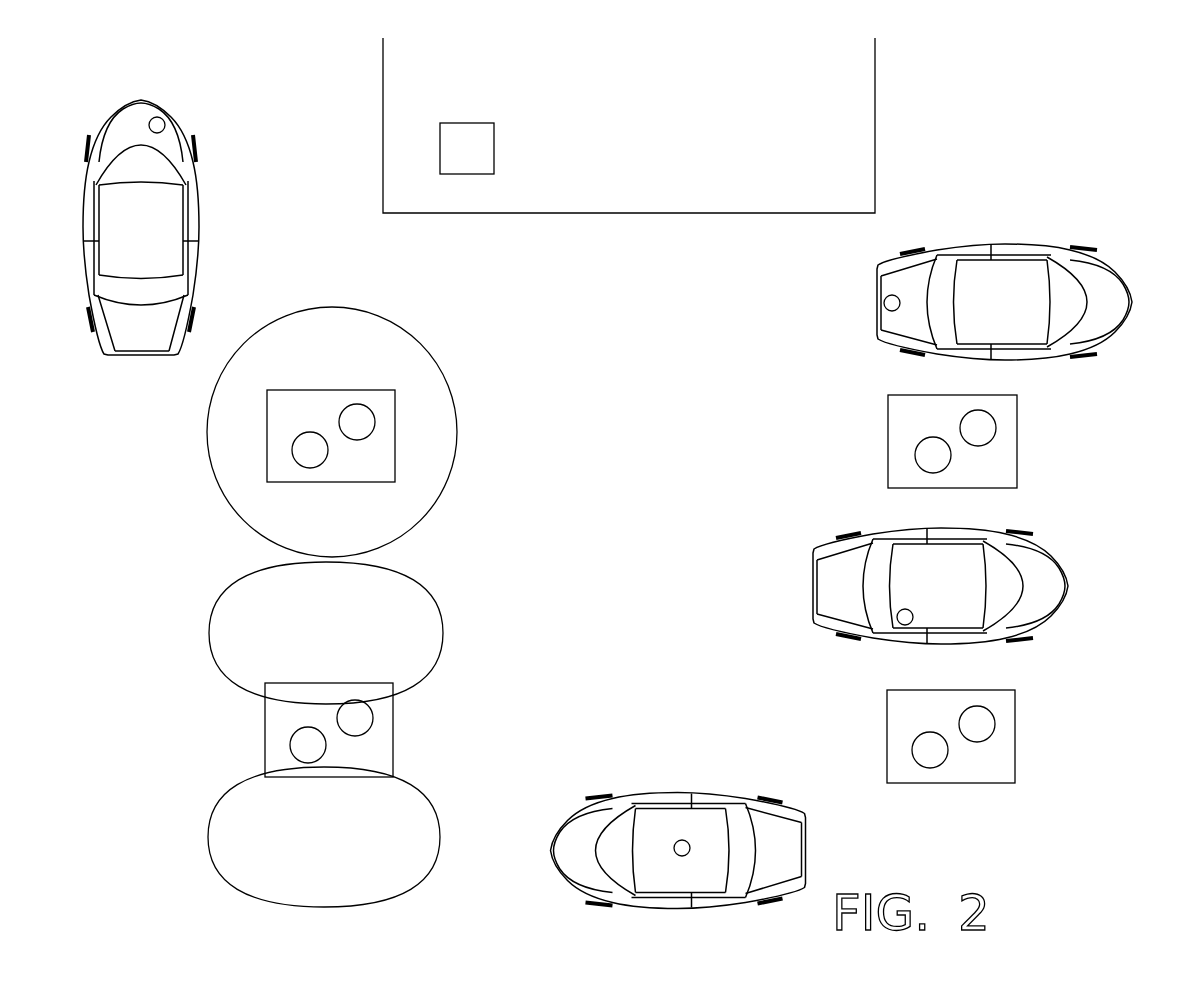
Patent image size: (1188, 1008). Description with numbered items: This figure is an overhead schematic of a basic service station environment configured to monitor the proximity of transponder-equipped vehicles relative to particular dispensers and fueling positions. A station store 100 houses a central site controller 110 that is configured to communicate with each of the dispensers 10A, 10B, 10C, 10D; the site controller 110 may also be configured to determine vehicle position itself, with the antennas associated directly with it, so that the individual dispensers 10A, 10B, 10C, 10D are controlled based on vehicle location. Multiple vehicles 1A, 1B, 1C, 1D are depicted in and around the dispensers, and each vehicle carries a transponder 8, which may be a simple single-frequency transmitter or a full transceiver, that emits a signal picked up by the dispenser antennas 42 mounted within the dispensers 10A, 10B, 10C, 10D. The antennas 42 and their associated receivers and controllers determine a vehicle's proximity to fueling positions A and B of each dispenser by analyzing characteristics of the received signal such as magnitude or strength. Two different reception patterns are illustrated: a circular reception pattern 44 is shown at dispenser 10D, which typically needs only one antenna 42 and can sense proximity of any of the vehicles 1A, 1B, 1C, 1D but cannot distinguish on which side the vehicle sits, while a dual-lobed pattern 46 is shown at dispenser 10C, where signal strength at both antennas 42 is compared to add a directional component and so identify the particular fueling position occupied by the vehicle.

The vehicle 1A is at (1068, 568).
The vehicle 1B is at (551, 872).
The vehicle 1C is at (118, 98).
The vehicle 1D is at (1130, 281).
The transponder 8 is at (162, 117).
The dispenser 10A is at (938, 424).
The dispenser 10B is at (936, 717).
The dispenser 10C is at (312, 712).
The dispenser 10D is at (315, 419).
The dispenser antenna 42 is at (995, 433).
The circular reception pattern 44 is at (456, 401).
The dual-lobed pattern 46 is at (209, 825).
The station store 100 is at (613, 164).
The central site controller 110 is at (489, 158).